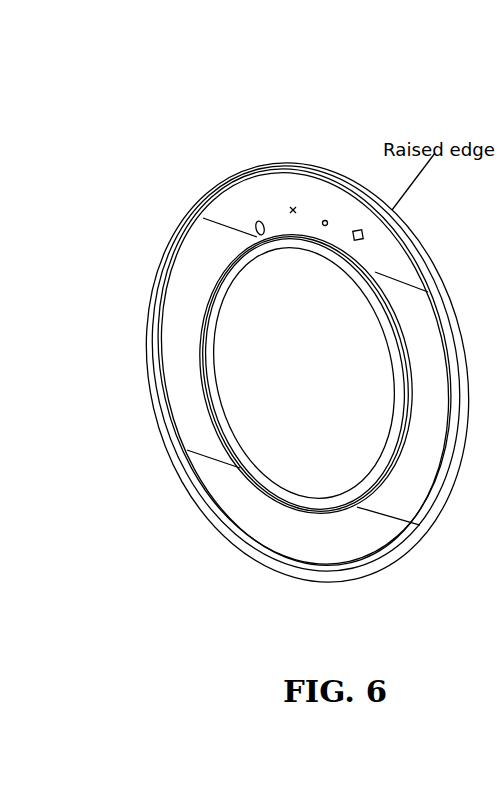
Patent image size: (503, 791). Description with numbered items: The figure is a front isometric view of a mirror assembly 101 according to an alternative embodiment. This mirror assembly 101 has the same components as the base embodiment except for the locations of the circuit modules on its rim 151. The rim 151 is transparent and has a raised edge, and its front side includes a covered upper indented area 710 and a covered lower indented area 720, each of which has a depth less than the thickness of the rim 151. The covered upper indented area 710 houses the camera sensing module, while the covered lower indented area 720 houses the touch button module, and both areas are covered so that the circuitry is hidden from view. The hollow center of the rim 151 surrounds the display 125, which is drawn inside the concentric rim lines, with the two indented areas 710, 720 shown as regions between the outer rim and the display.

The mirror assembly 101 is at (356, 103).
The rim 151 is at (183, 275).
The Display 125 is at (306, 374).
The covered upper indented area 710 is at (245, 207).
The covered lower indented area 720 is at (327, 548).